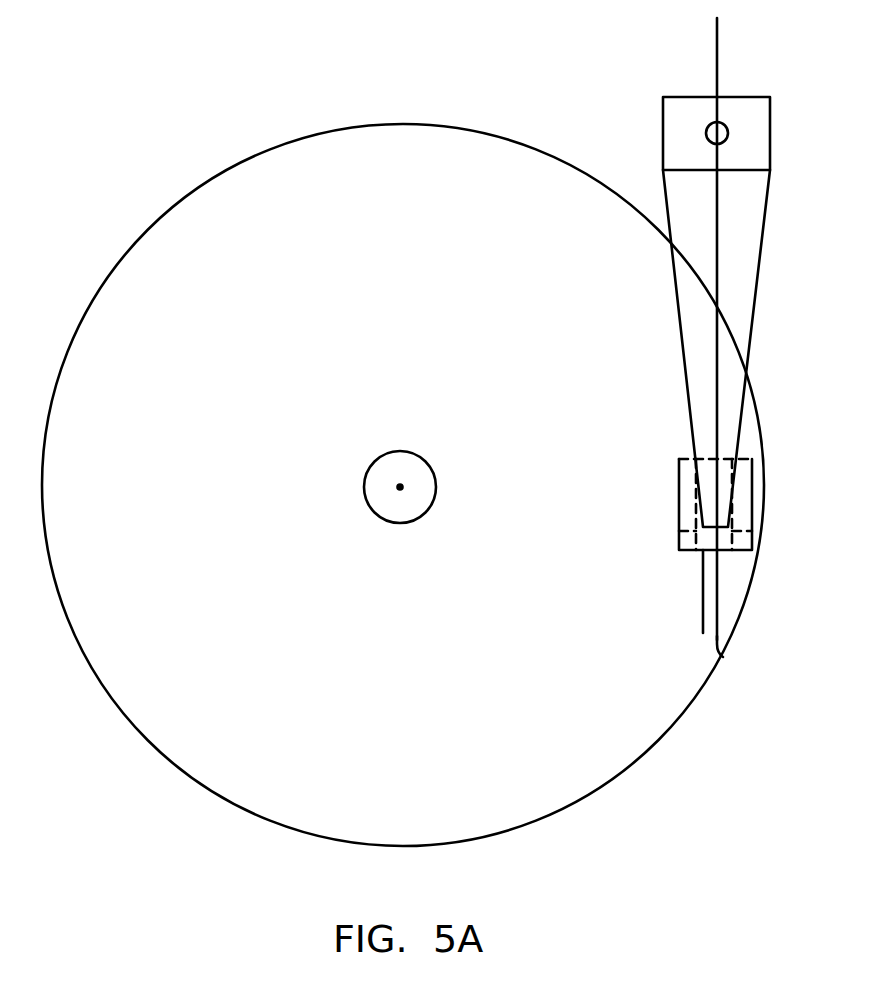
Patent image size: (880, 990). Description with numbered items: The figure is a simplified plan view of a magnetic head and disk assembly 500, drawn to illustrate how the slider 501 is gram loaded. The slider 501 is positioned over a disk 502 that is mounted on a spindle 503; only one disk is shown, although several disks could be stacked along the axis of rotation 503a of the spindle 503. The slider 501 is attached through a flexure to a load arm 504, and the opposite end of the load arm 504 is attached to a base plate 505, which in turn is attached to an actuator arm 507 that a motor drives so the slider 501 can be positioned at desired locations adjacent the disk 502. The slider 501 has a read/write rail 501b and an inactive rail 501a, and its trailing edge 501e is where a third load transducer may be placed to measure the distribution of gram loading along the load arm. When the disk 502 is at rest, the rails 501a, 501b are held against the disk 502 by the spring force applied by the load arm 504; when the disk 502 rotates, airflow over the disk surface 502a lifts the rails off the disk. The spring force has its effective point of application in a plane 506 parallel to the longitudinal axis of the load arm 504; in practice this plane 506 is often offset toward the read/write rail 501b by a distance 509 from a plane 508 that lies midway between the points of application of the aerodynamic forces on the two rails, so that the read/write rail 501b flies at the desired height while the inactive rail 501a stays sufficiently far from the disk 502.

The magnetic head and disk assembly 500 is at (148, 177).
The slider 501 is at (750, 545).
The inactive rail 501a is at (688, 507).
The read/write rail 501b is at (740, 502).
The trailing edge 501e is at (743, 458).
The disk 502 is at (692, 703).
The disk surface 502a is at (610, 758).
The spindle 503 is at (415, 452).
The axis of rotation 503a is at (400, 487).
The load arm 504 is at (764, 225).
The base plate 505 is at (770, 130).
The plane 506 is at (717, 53).
The actuator arm 507 is at (712, 125).
The plane 508 is at (767, 622).
The distance 509 is at (722, 652).